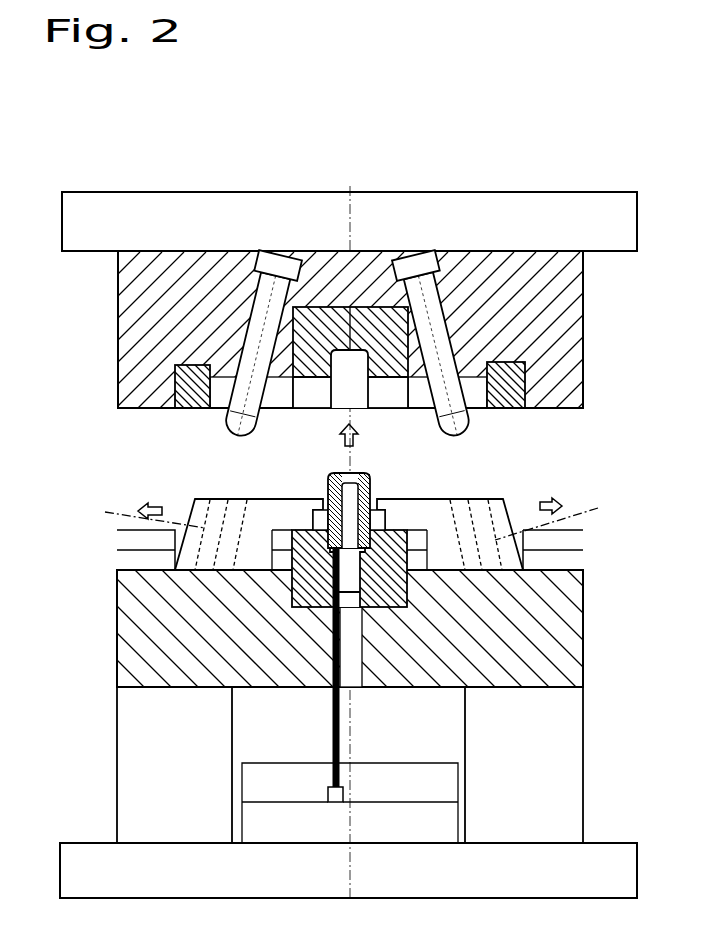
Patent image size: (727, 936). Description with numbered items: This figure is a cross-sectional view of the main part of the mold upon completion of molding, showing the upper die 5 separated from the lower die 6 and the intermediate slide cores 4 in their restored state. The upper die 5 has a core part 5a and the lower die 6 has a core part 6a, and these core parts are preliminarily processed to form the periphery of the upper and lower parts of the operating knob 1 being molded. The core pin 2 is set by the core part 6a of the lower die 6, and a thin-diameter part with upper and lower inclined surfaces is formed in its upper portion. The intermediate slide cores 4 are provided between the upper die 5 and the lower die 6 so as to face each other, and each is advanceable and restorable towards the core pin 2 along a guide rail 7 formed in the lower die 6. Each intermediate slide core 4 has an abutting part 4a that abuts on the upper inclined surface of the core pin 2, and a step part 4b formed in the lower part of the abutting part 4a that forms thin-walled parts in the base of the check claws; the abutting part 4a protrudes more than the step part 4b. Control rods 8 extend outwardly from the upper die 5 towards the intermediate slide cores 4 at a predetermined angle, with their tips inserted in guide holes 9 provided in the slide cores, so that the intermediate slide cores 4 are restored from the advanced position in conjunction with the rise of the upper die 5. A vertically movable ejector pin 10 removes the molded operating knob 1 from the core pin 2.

The operating knob 1 is at (356, 486).
The core pin 2 is at (383, 608).
The intermediate slide core 4 is at (200, 523).
The abutting part 4a is at (323, 510).
The step part 4b is at (311, 517).
The upper die 5 is at (147, 318).
The core part of upper die 5a is at (377, 272).
The lower die 6 is at (565, 640).
The core part of lower die 6a is at (297, 612).
The guide rail 7 is at (143, 550).
The control rod 8 is at (247, 357).
The guide hole 9 is at (348, 516).
The ejector pin 10 is at (333, 694).